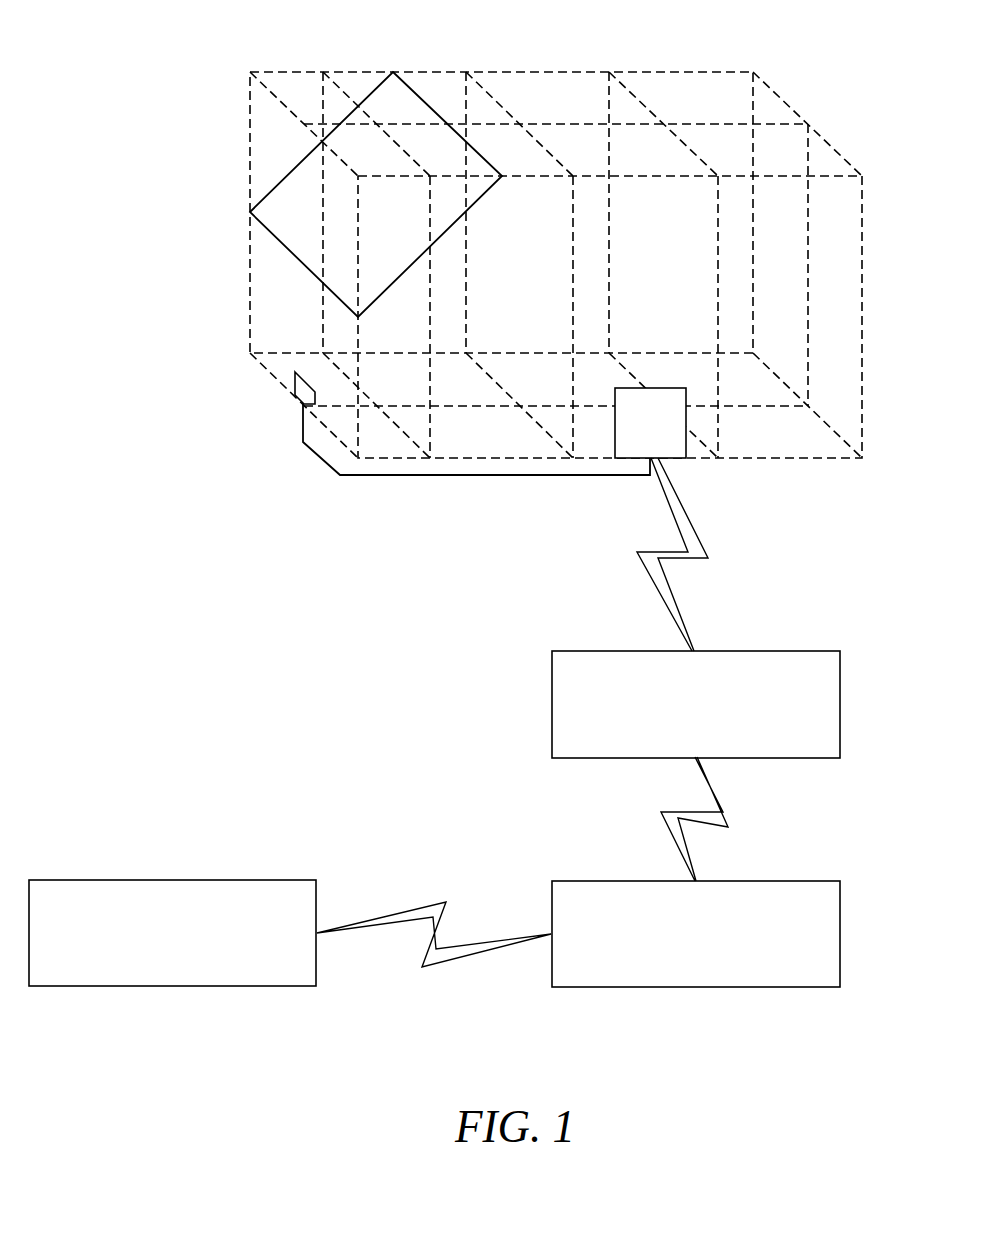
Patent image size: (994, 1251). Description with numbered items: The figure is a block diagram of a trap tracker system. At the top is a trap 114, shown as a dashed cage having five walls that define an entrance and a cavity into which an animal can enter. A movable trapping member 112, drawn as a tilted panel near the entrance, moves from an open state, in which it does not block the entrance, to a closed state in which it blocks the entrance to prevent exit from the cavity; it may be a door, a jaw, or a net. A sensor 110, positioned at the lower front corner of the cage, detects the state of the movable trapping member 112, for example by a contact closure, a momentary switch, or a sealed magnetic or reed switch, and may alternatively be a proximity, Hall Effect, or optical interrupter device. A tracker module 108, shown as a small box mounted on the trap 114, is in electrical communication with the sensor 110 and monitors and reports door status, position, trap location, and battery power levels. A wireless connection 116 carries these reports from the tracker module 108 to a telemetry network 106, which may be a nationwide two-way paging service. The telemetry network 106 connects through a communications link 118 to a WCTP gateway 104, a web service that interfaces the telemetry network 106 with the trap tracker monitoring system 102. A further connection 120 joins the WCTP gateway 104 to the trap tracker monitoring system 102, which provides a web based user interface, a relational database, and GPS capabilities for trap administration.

The trap tracker monitoring system 102 is at (172, 933).
The WCTP gateway 104 is at (696, 934).
The telemetry network 106 is at (696, 704).
The tracker module 108 is at (686, 425).
The sensor 110 is at (297, 387).
The movable trapping member 112 is at (285, 248).
The trap 114 is at (680, 70).
The wireless link between trap unit and telemetry network 116 is at (652, 575).
The communications link 118 is at (725, 813).
The communication link between WCTP gateway and monitoring system 120 is at (412, 907).